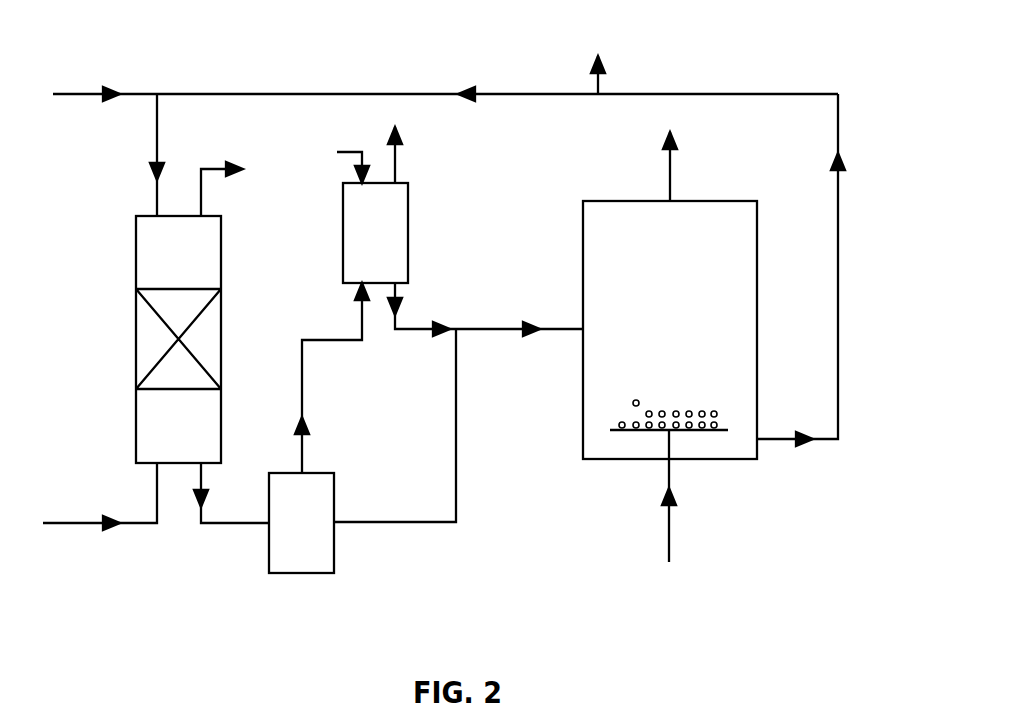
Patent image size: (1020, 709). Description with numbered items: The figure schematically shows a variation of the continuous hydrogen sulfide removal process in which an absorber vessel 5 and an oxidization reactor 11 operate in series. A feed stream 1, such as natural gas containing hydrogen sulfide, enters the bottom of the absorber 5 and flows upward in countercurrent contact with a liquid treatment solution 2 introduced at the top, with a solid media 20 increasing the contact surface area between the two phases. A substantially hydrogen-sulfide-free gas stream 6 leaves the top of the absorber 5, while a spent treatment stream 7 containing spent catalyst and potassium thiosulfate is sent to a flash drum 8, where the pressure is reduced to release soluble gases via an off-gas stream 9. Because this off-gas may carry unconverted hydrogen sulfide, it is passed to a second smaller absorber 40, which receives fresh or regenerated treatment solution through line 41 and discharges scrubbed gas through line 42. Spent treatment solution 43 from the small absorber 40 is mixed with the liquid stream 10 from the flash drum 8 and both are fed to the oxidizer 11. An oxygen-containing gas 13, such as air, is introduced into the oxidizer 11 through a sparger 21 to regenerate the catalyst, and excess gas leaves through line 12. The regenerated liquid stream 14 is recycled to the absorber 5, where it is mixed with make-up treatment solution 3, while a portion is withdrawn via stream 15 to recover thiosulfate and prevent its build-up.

The feed stream 1 is at (80, 520).
The liquid treatment solution 2 is at (155, 135).
The make-up treatment solution 3 is at (83, 93).
The absorber vessel 5 is at (178, 339).
The H2S-free gas stream 6 is at (210, 170).
The spent treatment stream 7 is at (217, 525).
The flash drum 8 is at (301, 523).
The off-gas stream 9 is at (305, 440).
The liquid stream 10 is at (459, 452).
The oxidization reactor 11 is at (670, 330).
The excess gas line 12 is at (672, 173).
The oxygen-containing gas 13 is at (672, 520).
The regenerated liquid stream 14 is at (840, 370).
The thiosulfate removal stream 15 is at (600, 80).
The solid media 20 is at (208, 342).
The sparger 21 is at (660, 413).
The second smaller absorber 40 is at (375, 233).
The treatment solution line 41 is at (357, 150).
The scrubbed gas line 42 is at (398, 160).
The spent treatment solution 43 is at (418, 328).